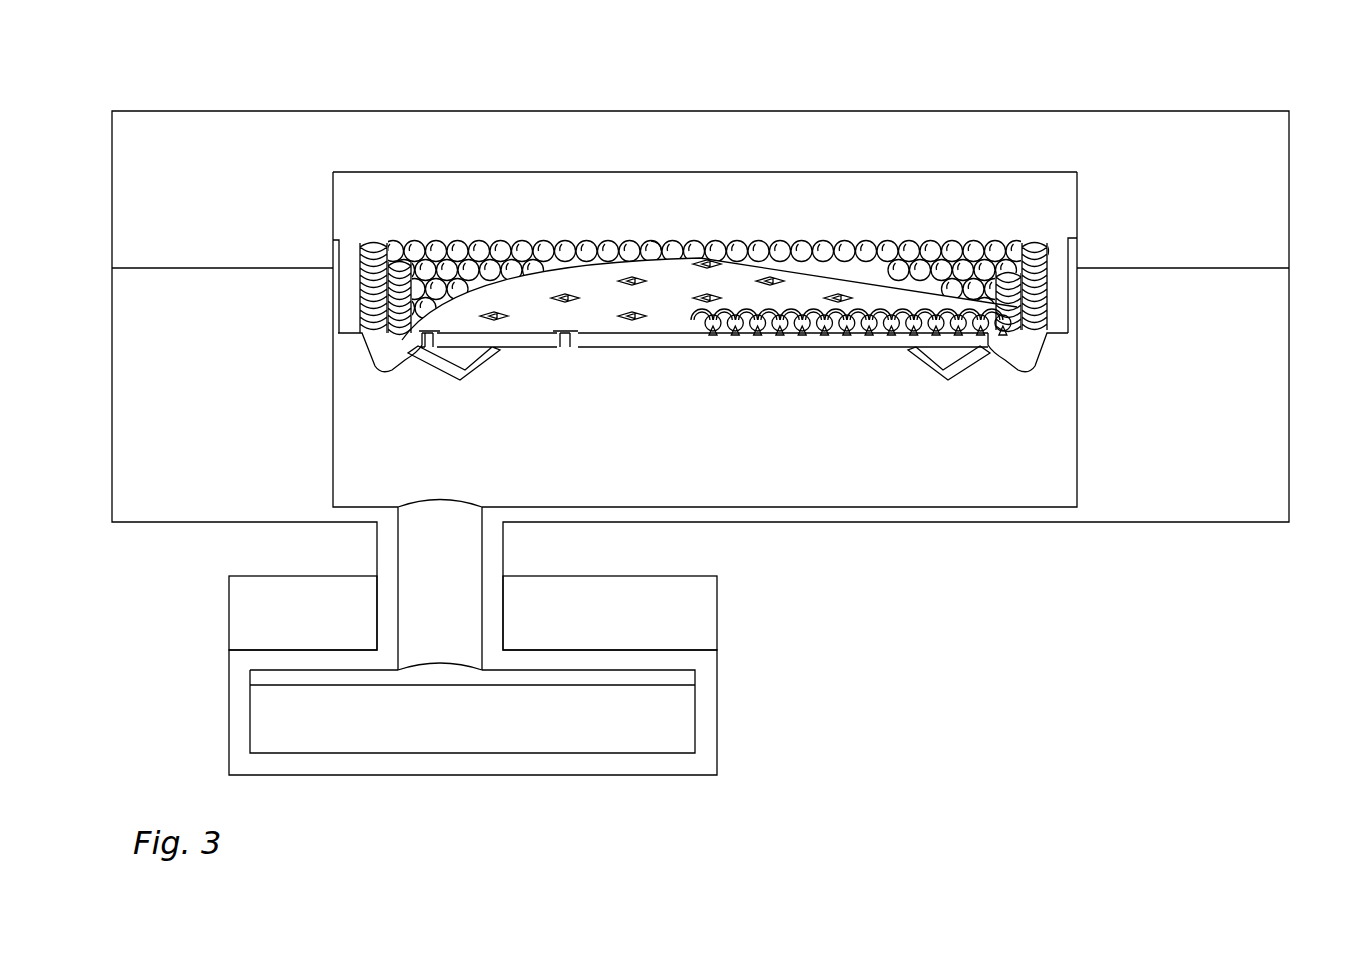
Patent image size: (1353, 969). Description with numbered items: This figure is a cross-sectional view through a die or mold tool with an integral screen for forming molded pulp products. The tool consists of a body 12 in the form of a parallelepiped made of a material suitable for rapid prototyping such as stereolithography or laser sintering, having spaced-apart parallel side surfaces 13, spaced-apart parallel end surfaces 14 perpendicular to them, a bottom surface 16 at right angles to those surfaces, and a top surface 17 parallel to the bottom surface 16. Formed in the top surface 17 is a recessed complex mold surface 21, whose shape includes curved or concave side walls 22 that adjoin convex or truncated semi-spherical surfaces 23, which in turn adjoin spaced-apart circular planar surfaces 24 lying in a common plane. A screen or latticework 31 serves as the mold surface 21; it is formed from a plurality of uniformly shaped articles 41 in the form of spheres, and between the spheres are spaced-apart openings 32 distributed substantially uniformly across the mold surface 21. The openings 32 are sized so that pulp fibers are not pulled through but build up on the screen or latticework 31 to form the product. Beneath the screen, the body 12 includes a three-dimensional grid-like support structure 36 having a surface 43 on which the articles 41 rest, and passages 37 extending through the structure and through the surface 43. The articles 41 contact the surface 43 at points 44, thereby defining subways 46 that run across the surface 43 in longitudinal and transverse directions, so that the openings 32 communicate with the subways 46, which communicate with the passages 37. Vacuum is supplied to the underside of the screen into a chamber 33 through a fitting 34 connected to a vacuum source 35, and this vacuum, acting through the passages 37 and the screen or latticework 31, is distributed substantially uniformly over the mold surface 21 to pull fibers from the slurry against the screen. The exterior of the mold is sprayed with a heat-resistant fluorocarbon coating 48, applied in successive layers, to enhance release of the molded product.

The body 12 is at (1291, 214).
The side surfaces 13 is at (1292, 496).
The end surfaces 14 is at (110, 486).
The bottom surface 16 is at (818, 528).
The top surface 17 is at (620, 130).
The mold surface 21 is at (383, 240).
The side walls 22 is at (416, 262).
The truncated semi-spherical surfaces 23 is at (414, 310).
The circular planar surfaces 24 is at (733, 310).
The screen or latticework 31 is at (936, 296).
The openings 32 is at (796, 310).
The chamber 33 is at (332, 422).
The fitting 34 is at (495, 625).
The vacuum source 35 is at (685, 735).
The grid-like support structure 36 is at (717, 345).
The passages 37 is at (567, 346).
The uniformly shaped articles 41 is at (572, 242).
The surface 43 is at (520, 320).
The contact points 44 is at (793, 334).
The subways 46 is at (871, 320).
The coating 48 is at (654, 245).